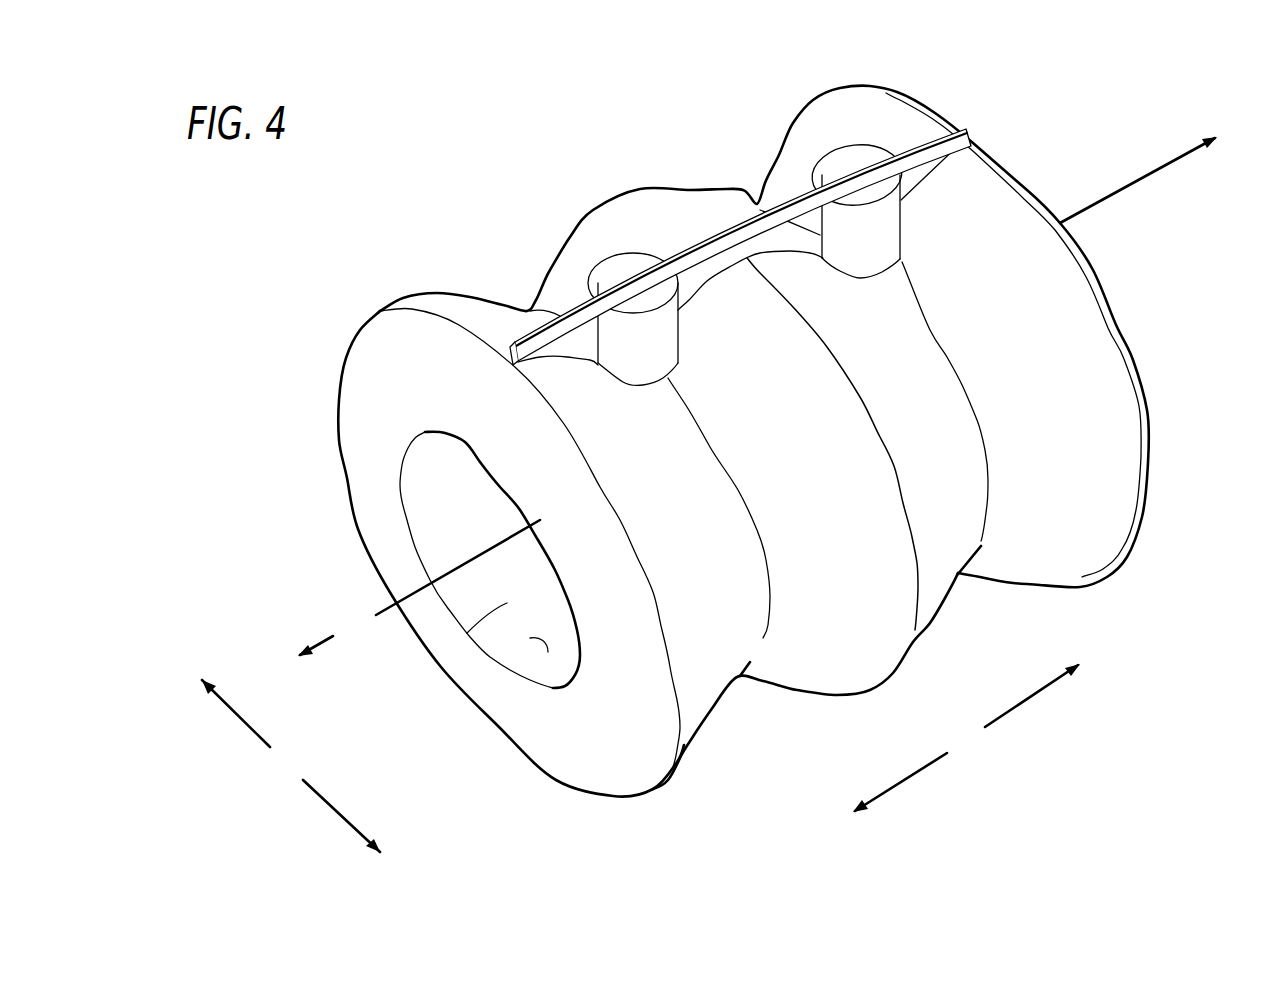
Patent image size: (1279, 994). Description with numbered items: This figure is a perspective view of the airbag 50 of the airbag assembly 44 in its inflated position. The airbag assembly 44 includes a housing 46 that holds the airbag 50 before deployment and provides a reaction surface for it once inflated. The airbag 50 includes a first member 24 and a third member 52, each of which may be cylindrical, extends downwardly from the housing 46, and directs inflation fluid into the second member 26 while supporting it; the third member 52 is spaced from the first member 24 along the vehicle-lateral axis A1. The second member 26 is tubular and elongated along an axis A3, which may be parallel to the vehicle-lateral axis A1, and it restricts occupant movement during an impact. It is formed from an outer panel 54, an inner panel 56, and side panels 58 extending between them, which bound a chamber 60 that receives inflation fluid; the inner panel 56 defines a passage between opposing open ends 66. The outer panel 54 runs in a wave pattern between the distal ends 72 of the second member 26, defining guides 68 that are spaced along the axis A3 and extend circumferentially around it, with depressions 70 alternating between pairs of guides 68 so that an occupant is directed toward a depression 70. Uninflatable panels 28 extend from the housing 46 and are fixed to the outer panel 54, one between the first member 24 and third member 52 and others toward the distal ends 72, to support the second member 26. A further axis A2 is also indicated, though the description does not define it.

The first member 24 is at (634, 368).
The second member 26 is at (866, 658).
The uninflatable panel 28 is at (561, 347).
The airbag assembly 44 is at (507, 160).
The housing 46 is at (752, 206).
The airbag 50 is at (1063, 204).
The third member 52 is at (846, 254).
The outer panel 54 is at (824, 665).
The inner panel 56 is at (530, 638).
The side panels 58 is at (573, 747).
The chamber 60 is at (460, 477).
The open ends 66 is at (467, 633).
The guides 68 is at (378, 309).
The depressions 70 is at (527, 310).
The distal end 72 is at (504, 367).
The vehicle-lateral axis A1 is at (966, 738).
The transverse axis A2 is at (291, 766).
The axis A3 is at (419, 588).